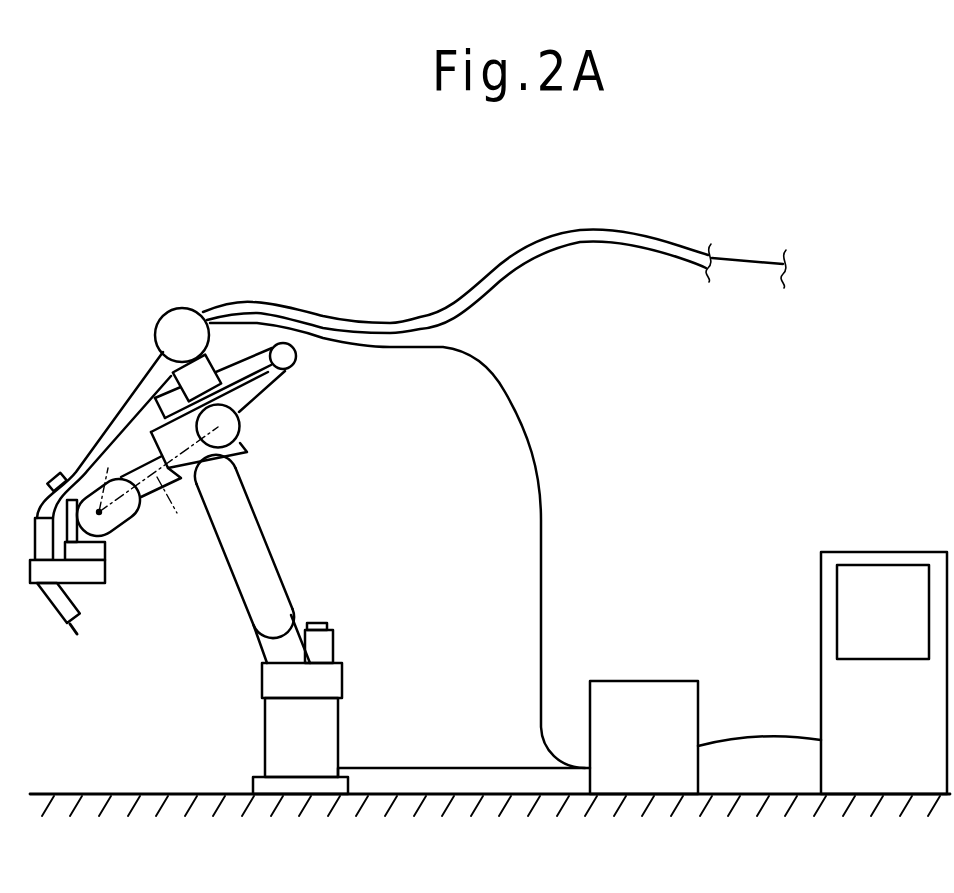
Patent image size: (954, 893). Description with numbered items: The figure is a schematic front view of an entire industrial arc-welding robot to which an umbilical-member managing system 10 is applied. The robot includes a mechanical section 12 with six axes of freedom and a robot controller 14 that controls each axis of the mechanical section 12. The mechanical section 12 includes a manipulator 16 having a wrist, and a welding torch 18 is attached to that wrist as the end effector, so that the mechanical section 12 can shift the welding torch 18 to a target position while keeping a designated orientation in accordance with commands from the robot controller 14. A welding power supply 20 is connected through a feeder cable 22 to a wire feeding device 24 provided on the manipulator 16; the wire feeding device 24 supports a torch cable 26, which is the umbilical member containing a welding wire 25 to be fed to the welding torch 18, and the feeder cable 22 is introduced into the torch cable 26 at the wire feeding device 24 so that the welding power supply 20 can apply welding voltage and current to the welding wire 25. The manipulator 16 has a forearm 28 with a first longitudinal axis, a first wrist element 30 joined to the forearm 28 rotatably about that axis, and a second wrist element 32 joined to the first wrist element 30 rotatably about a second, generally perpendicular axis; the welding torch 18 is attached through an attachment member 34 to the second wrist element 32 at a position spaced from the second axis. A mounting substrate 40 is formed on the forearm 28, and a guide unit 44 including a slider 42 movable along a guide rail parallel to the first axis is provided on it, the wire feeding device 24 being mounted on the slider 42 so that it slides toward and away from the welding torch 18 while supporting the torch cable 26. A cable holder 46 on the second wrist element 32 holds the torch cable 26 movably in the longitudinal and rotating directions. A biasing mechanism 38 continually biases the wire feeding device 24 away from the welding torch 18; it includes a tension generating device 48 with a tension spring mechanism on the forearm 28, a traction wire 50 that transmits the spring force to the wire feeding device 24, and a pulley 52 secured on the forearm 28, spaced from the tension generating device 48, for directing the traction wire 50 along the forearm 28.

The umbilical-member managing system 10 is at (256, 205).
The mechanical section 12 is at (327, 592).
The robot controller 14 is at (926, 541).
The manipulator 16 is at (219, 588).
The welding torch 18 is at (76, 605).
The welding power supply 20 is at (640, 688).
The feeder cable 22 is at (541, 521).
The wire feeding device 24 is at (151, 320).
The welding wire 25 is at (743, 259).
The torch cable 26 is at (358, 320).
The forearm 28 is at (248, 455).
The first wrist element 30 is at (143, 500).
The second wrist element 32 is at (86, 545).
The attachment member 34 is at (35, 584).
The biasing mechanism 38 is at (284, 427).
The mounting substrate 40 is at (143, 383).
The slider 42 is at (197, 372).
The guide unit 44 is at (220, 354).
The cable holder 46 is at (62, 471).
The tension generating device 48 is at (229, 426).
The traction wire 50 is at (273, 390).
The pulley 52 is at (283, 353).